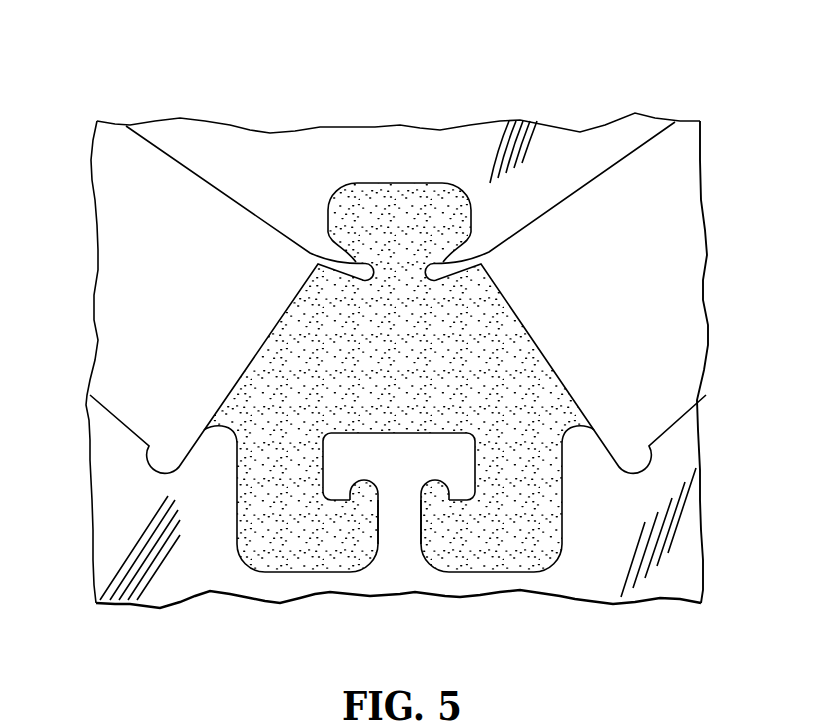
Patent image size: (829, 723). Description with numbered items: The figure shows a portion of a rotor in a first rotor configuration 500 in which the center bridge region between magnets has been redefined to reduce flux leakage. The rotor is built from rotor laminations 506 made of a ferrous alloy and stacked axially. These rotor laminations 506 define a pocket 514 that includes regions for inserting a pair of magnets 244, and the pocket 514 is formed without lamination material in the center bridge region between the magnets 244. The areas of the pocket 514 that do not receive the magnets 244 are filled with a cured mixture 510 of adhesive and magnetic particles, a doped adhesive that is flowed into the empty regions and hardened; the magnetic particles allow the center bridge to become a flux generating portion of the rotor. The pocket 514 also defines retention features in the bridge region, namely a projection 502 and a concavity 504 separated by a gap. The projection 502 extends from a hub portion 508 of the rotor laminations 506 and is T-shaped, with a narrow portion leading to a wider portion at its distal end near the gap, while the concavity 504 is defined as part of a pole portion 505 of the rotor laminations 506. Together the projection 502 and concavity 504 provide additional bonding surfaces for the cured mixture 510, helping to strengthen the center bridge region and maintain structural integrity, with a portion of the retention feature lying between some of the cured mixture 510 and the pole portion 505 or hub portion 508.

The first rotor configuration 500 is at (625, 53).
The magnets 244 is at (140, 278).
The projection 502 is at (398, 452).
The concavity 504 is at (402, 198).
The pole portion 505 is at (439, 149).
The rotor laminations 506 is at (683, 565).
The hub portion 508 is at (402, 548).
The cured mixture 510 is at (517, 453).
The pocket 514 is at (301, 574).